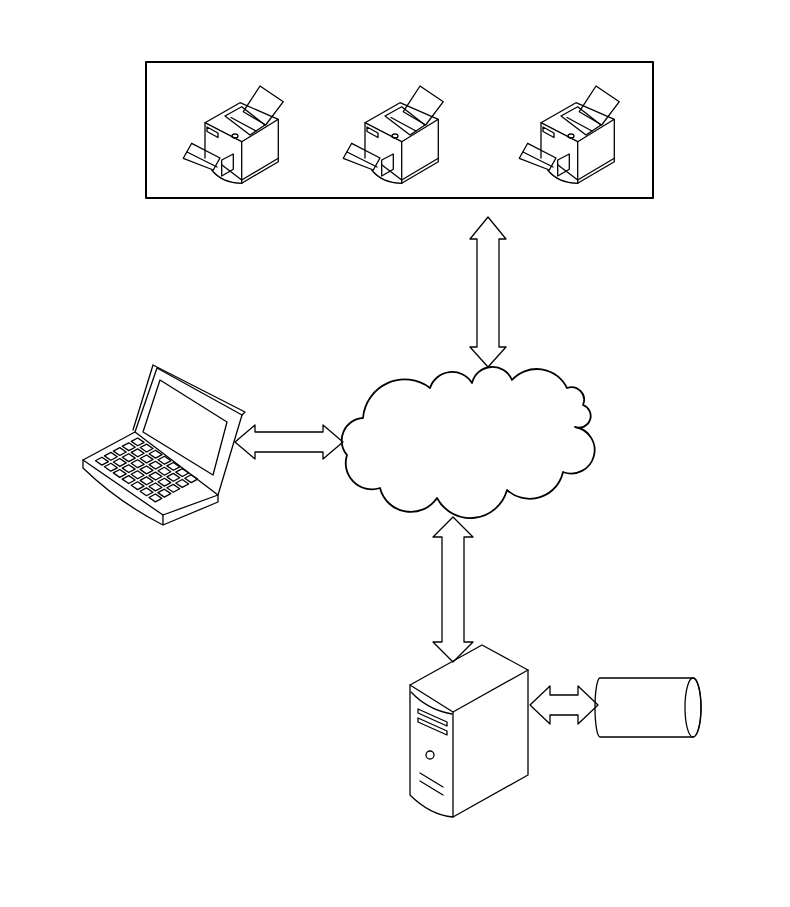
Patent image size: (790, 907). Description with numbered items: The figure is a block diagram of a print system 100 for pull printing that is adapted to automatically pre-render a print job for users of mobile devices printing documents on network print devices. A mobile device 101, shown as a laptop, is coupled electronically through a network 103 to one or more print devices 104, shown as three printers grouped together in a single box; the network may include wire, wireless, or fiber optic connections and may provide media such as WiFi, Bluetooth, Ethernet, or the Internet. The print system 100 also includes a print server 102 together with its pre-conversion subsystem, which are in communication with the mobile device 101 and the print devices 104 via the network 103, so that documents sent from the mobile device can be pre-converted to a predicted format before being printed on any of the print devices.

The print system 100 is at (92, 104).
The mobile device 101 is at (128, 510).
The print server 102 is at (410, 738).
The network 103 is at (583, 402).
The print device 104 is at (525, 62).